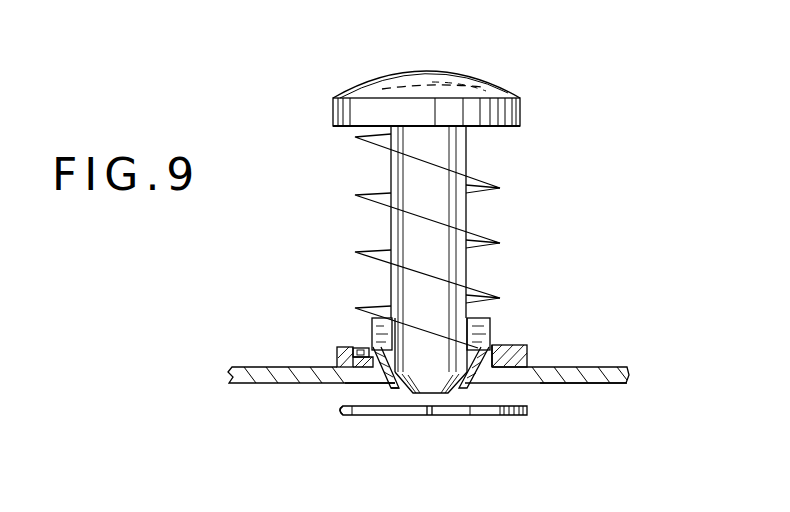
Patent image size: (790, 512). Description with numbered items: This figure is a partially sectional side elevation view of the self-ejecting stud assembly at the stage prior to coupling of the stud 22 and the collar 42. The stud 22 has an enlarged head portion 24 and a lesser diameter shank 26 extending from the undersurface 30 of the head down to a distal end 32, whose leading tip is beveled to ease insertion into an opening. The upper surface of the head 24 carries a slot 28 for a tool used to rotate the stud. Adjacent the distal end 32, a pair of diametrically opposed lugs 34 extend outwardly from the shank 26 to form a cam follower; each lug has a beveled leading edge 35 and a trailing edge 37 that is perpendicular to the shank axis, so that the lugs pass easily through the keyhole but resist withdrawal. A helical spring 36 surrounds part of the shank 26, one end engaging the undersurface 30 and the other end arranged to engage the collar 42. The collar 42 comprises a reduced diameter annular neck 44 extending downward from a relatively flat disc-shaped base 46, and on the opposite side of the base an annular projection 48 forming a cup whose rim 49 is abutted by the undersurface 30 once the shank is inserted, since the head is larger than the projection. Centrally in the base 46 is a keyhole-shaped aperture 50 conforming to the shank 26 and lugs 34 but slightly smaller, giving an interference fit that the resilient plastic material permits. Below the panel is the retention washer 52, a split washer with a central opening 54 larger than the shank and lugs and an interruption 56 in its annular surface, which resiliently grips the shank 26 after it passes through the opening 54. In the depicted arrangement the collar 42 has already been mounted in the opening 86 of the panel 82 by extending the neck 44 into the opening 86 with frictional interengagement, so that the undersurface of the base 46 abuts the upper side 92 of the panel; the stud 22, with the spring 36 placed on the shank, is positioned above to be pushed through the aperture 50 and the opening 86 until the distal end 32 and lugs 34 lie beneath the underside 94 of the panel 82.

The stud 22 is at (540, 191).
The head portion 24 is at (460, 73).
The shank 26 is at (390, 160).
The slot 28 is at (388, 78).
The undersurface 30 is at (497, 127).
The distal end 32 is at (418, 395).
The lugs 34 is at (370, 332).
The leading edge 35 is at (393, 388).
The helical spring 36 is at (497, 240).
The trailing edge 37 is at (492, 318).
The collar 42 is at (527, 350).
The annular neck 44 is at (346, 386).
The base 46 is at (503, 350).
The annular projection 48 is at (360, 347).
The rim 49 is at (345, 347).
The aperture 50 is at (470, 388).
The retention washer 52 is at (338, 412).
The central opening 54 is at (477, 413).
The interruption 56 is at (433, 416).
The panel 82 is at (262, 384).
The opening 86 is at (542, 367).
The upper side 92 is at (600, 366).
The underside 94 is at (610, 384).